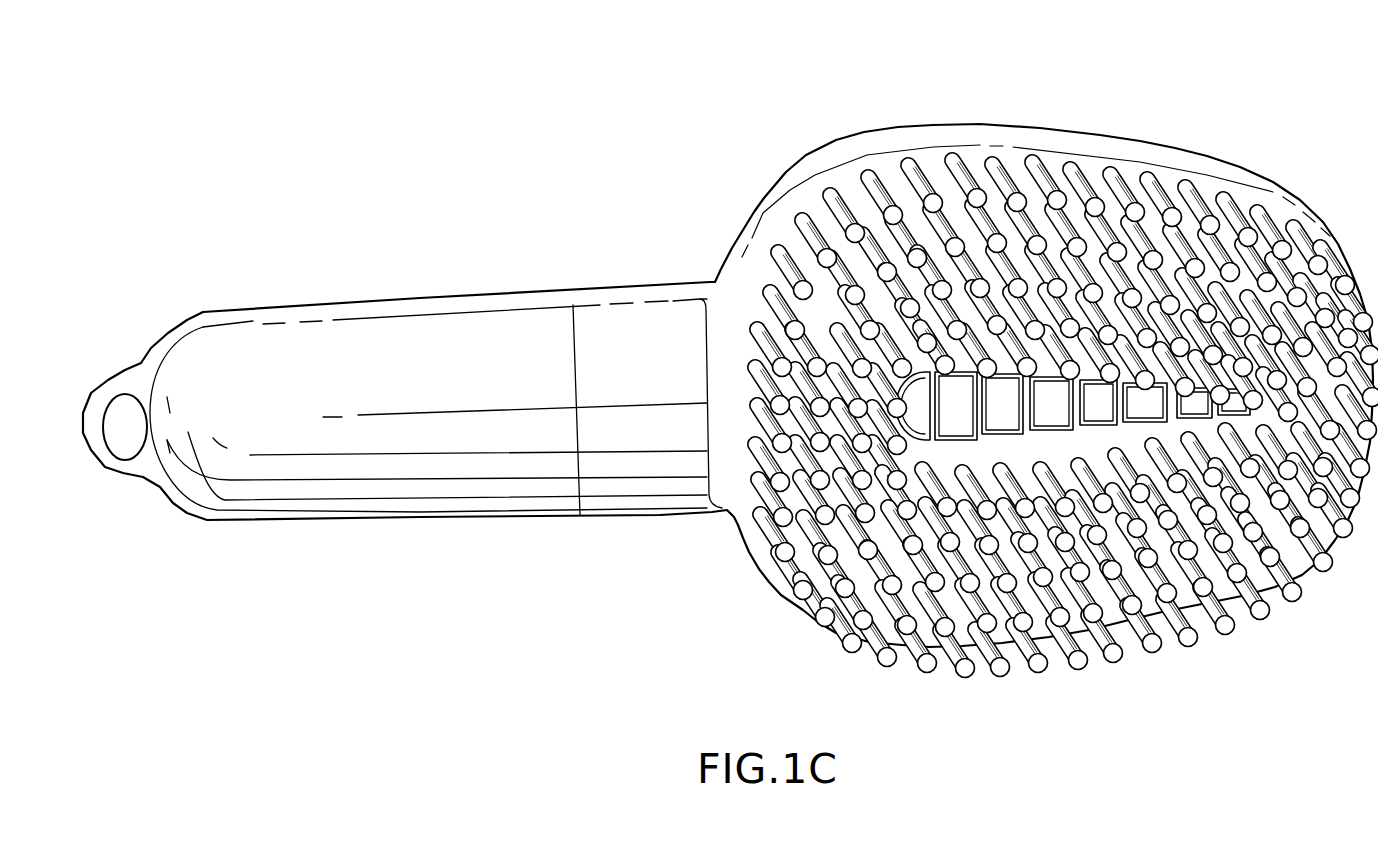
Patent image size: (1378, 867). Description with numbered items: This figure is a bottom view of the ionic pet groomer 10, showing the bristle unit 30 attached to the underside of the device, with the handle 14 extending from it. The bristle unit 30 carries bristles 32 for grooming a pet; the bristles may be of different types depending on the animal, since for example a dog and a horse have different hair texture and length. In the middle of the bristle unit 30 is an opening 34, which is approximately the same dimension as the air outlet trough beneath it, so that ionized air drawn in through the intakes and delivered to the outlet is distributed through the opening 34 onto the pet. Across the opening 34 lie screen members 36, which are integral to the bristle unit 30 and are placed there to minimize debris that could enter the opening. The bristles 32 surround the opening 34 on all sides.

The ionic pet groomer 10 is at (215, 250).
The handle 14 is at (372, 350).
The bristle unit 30 is at (917, 222).
The bristles 32 is at (1085, 193).
The opening 34 is at (1100, 405).
The screen members 36 is at (1028, 407).